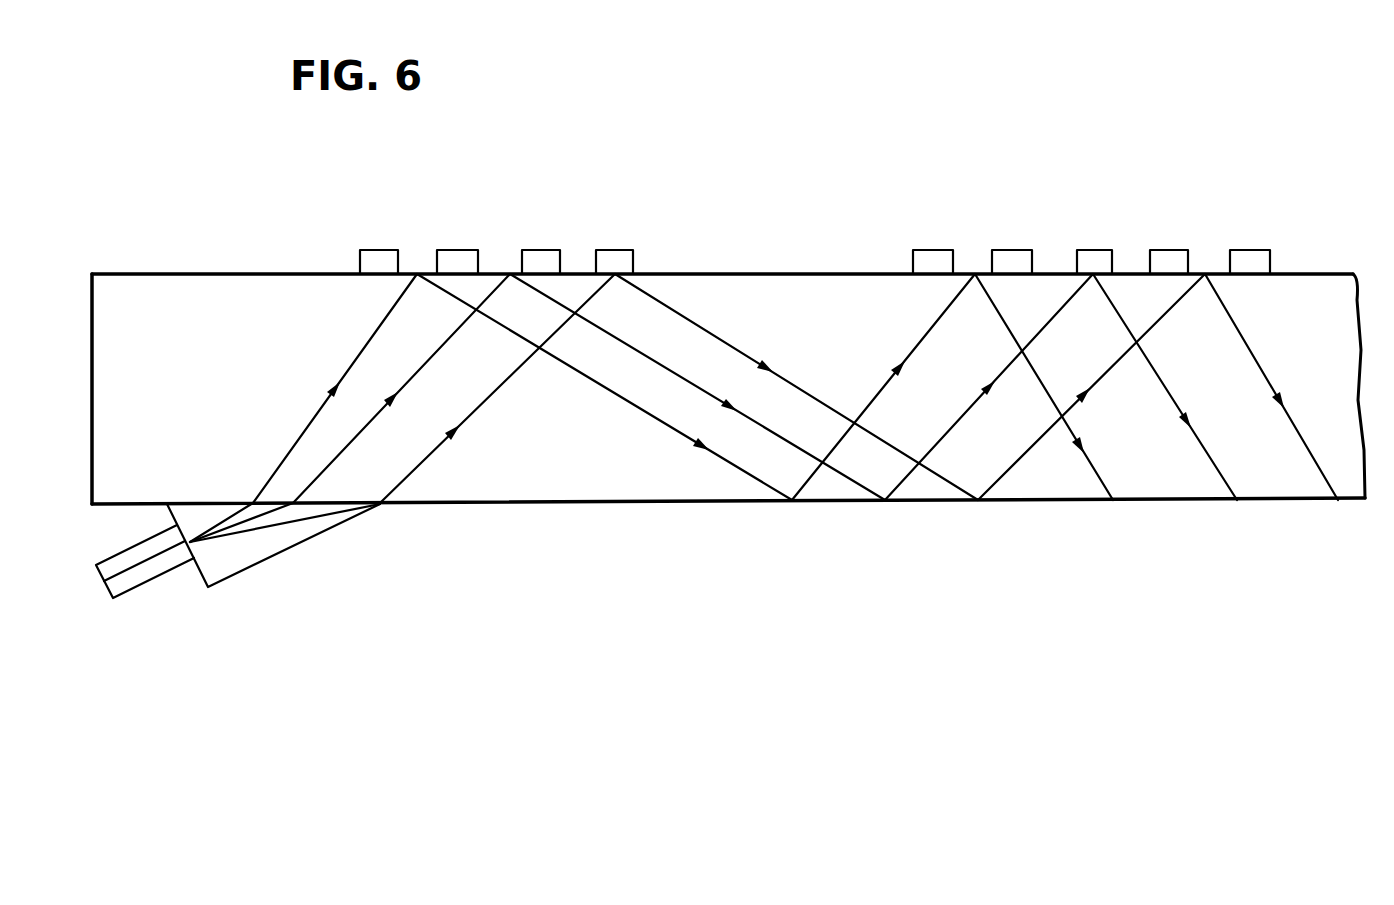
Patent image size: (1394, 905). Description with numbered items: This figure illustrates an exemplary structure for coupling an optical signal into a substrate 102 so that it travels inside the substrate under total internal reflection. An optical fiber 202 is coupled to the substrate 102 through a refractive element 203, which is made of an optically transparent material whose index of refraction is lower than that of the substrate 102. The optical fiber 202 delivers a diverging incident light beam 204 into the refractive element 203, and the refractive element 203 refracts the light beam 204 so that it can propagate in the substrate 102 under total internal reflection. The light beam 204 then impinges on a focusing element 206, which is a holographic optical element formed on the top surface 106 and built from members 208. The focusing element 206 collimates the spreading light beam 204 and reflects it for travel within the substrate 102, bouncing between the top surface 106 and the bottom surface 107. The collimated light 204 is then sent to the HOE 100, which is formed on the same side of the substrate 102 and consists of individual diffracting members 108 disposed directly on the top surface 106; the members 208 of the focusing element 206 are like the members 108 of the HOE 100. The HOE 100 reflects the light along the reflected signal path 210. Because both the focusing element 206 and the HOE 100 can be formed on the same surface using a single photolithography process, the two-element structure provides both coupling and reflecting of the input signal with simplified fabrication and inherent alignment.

The HOE 100 is at (1091, 204).
The substrate 102 is at (100, 300).
The top surface 106 is at (1327, 274).
The bottom surface 107 is at (1348, 503).
The diffracting members 108 is at (922, 250).
The optical fiber 202 is at (160, 583).
The refractive element 203 is at (300, 543).
The incident light beam 204 is at (204, 527).
The focusing element 206 is at (508, 195).
The members 208 is at (379, 250).
The reflected signal path 210 is at (1098, 470).